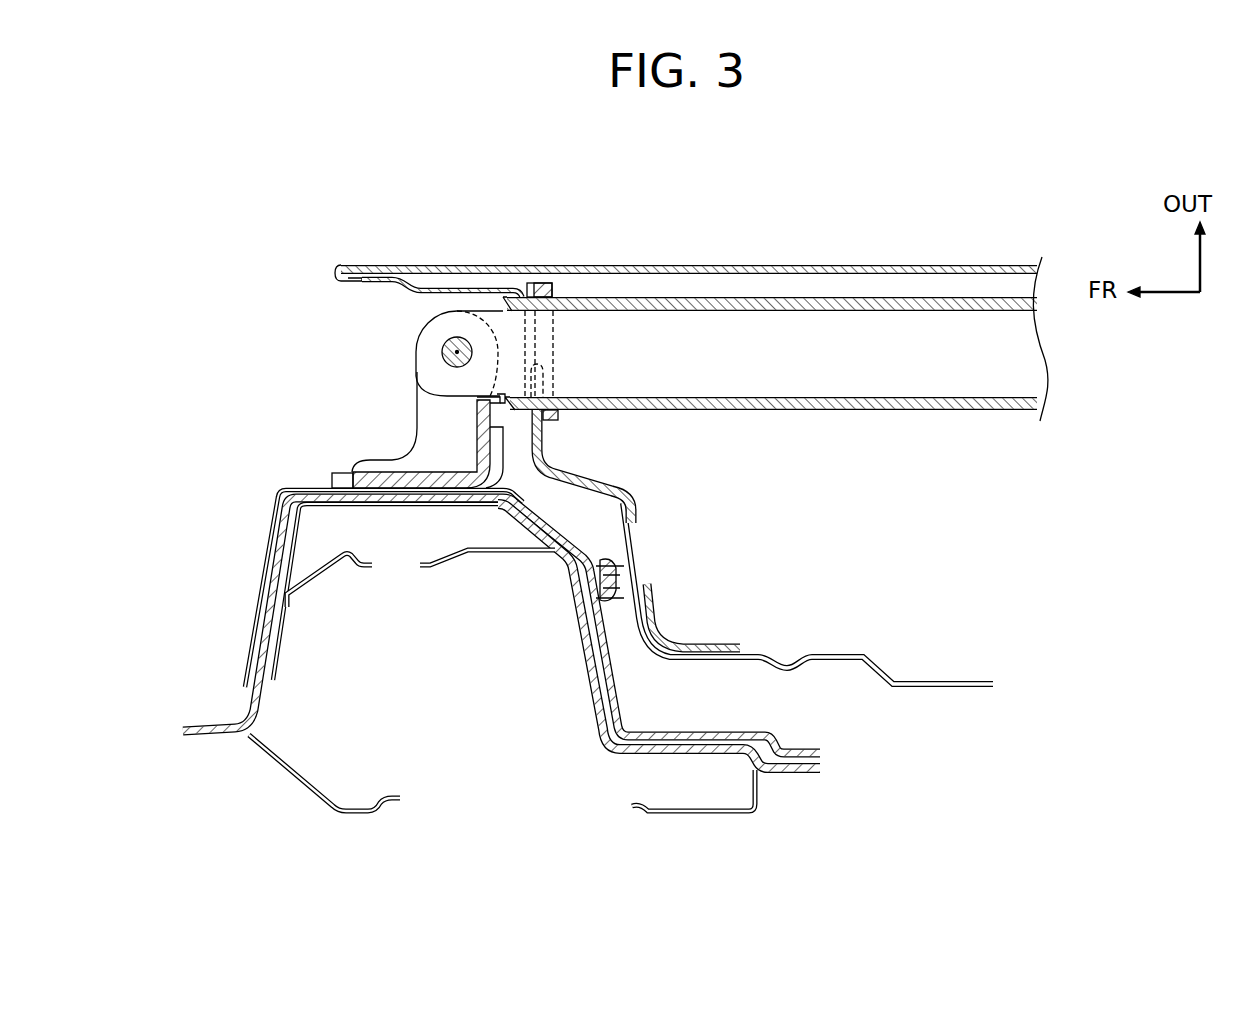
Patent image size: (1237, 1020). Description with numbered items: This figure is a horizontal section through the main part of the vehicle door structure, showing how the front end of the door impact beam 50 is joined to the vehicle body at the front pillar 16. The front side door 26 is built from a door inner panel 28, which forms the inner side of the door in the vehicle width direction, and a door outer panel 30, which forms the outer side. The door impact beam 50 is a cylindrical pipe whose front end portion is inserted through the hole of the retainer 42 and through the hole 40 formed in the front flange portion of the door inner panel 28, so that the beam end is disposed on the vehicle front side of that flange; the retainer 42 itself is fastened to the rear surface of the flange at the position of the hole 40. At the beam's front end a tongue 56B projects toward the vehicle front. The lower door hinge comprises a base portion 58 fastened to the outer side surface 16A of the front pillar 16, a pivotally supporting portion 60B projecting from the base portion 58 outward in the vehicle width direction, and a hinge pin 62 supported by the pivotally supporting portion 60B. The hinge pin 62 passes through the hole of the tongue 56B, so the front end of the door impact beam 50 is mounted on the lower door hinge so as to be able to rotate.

The front pillar 16 is at (278, 549).
The outer side surface 16A is at (307, 490).
The front side door 26 is at (812, 258).
The door inner panel 28 is at (842, 654).
The door outer panel 30 is at (925, 262).
The hole 40 is at (538, 367).
The retainer 42 is at (545, 282).
The door impact beam 50 is at (833, 413).
The tongue 56B is at (470, 308).
The base portion 58 is at (381, 471).
The pivotally supporting portion 60B is at (417, 412).
The hinge pin 62 is at (444, 349).